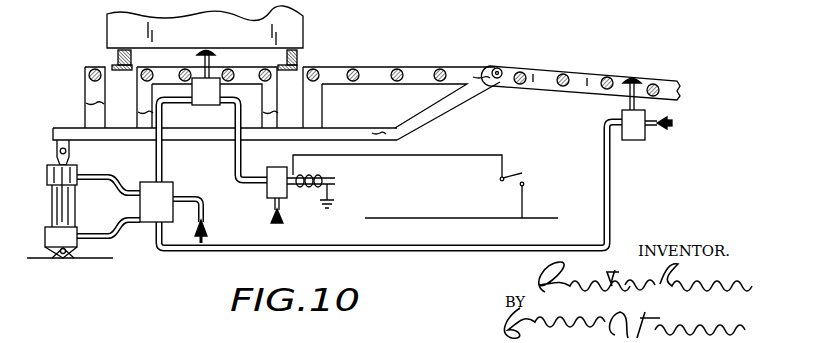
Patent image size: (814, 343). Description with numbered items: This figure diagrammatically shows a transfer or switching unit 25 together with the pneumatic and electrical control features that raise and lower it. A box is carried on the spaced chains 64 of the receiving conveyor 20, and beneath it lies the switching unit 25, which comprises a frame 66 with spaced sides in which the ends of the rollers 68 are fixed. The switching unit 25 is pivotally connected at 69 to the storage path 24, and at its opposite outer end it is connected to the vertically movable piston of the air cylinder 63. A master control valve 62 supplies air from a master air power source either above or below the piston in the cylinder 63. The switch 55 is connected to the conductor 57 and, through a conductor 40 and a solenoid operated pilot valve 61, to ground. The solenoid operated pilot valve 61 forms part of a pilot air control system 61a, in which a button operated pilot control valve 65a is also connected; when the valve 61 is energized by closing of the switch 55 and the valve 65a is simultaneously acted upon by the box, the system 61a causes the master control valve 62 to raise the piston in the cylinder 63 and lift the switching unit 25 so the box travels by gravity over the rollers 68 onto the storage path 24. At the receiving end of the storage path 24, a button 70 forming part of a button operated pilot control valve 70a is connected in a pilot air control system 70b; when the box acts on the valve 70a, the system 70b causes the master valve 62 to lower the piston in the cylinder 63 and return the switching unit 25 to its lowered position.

The receiving conveyor 20 is at (334, 34).
The storage path 24 is at (577, 88).
The transfer or switching unit 25 is at (445, 58).
The conductor 40 is at (433, 157).
The switch 55 is at (522, 174).
The conductor 57 is at (479, 218).
The solenoid operated pilot valve 61 is at (291, 195).
The pilot air control system 61a is at (160, 160).
The master control valve 62 is at (152, 223).
The air cylinder 63 is at (48, 203).
The chains 64 is at (110, 53).
The button operated pilot control valve 65a is at (212, 100).
The frame 66 is at (447, 110).
The rollers 68 is at (87, 77).
The pivotal connection 69 is at (499, 70).
The button 70 is at (633, 80).
The button operated pilot control valve 70a is at (637, 137).
The pilot air control system 70b is at (599, 238).